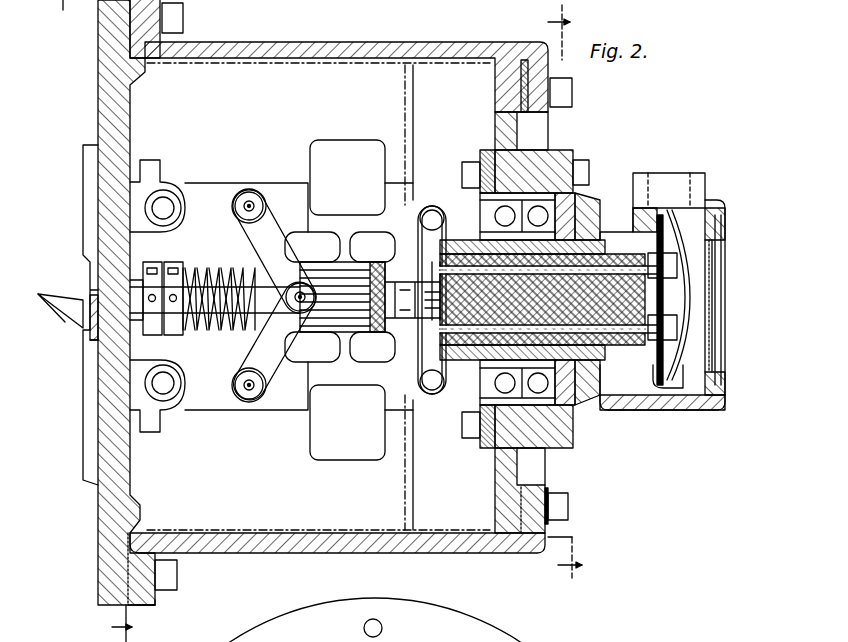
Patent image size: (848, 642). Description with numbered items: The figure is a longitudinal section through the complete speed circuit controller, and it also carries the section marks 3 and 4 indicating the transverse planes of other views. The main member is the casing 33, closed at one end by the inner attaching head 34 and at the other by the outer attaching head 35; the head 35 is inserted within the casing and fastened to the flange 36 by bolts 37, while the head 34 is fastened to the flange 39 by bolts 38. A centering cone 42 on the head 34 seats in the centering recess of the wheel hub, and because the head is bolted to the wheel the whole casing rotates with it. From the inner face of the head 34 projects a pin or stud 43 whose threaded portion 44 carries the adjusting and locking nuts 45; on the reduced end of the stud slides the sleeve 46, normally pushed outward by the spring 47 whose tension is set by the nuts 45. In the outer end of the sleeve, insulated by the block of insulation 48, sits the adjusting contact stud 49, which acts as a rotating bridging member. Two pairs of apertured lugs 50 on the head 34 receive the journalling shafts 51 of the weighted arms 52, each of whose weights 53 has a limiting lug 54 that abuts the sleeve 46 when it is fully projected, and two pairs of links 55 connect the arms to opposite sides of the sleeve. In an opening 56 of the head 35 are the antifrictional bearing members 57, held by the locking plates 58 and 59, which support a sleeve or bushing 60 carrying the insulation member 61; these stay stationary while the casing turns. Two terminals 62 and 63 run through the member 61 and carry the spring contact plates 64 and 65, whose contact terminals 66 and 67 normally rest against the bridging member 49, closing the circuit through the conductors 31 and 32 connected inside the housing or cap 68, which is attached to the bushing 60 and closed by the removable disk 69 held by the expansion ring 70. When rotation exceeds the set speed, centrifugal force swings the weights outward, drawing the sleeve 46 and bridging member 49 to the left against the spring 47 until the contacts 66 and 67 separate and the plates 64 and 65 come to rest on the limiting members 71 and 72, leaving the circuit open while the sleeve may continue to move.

The section line 3- 3 is at (565, 301).
The section line 4- 4 is at (66, 28).
The conductor 31 is at (665, 205).
The conductor 32 is at (690, 205).
The casing 33 is at (235, 523).
The inner attaching head 34 is at (120, 482).
The outer attaching head 35 is at (520, 464).
The flange 36 is at (550, 490).
The bolts 37 is at (562, 508).
The bolts 38 is at (170, 570).
The flange 39 is at (158, 602).
The centering cone 42 is at (62, 290).
The pin or stud 43 is at (230, 315).
The threaded portion 44 is at (210, 268).
The adjusting and locking nuts 45 is at (170, 262).
The sleeve 46 is at (345, 268).
The spring 47 is at (250, 206).
The block of insulation 48 is at (300, 325).
The adjusting contact stud 49 is at (395, 322).
The apertured lugs 50 is at (185, 175).
The journalling shafts 51 is at (165, 200).
The weighted arms 52 is at (250, 190).
The weights 53 is at (358, 145).
The limiting lug 54 is at (332, 248).
The links 55 is at (280, 222).
The opening 56 is at (530, 148).
The antifrictional bearing members 57 is at (580, 160).
The locking plate 58 is at (478, 165).
The locking plate 59 is at (575, 192).
The sleeve or bushing 60 is at (580, 225).
The insulation member 61 is at (580, 320).
The terminal 62 is at (660, 290).
The terminal 63 is at (660, 305).
The spring contact plate 64 is at (432, 206).
The spring contact plate 65 is at (432, 394).
The contact terminal 66 is at (432, 262).
The contact terminal 67 is at (432, 320).
The housing or cap 68 is at (715, 205).
The removable disk 69 is at (712, 250).
The expansion ring 70 is at (721, 215).
The limiting member 71 is at (412, 262).
The limiting member 72 is at (416, 322).